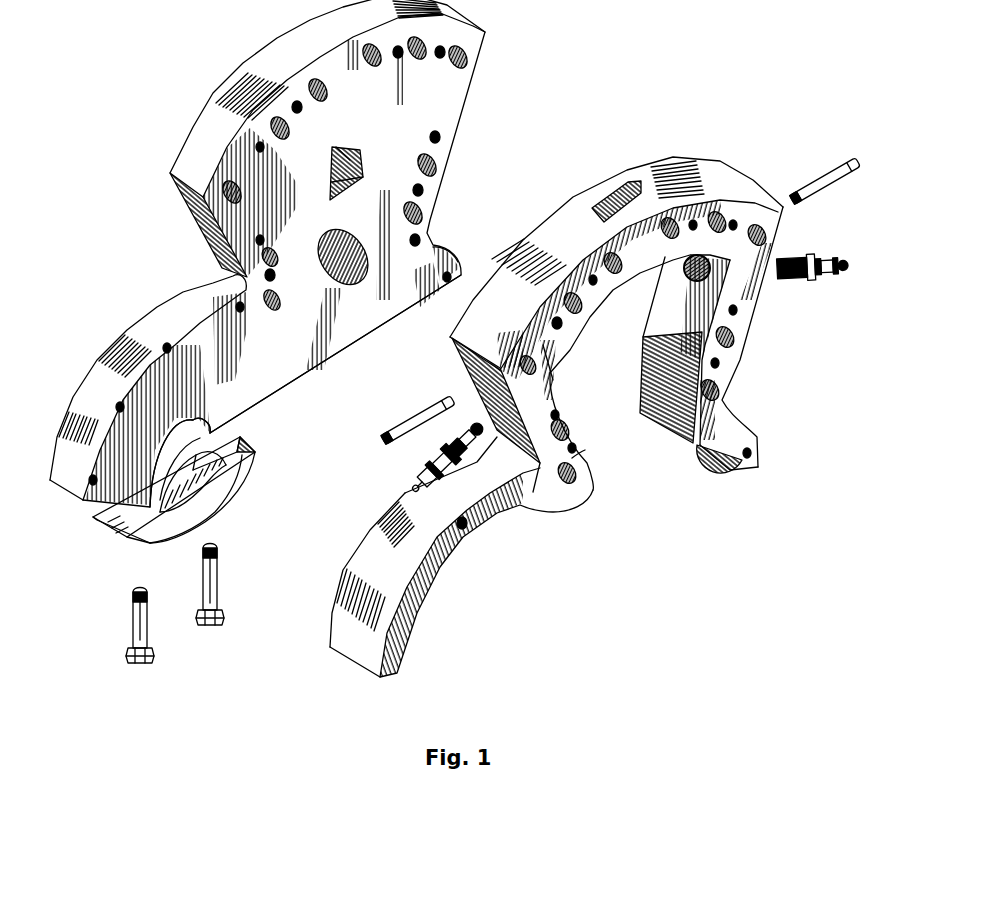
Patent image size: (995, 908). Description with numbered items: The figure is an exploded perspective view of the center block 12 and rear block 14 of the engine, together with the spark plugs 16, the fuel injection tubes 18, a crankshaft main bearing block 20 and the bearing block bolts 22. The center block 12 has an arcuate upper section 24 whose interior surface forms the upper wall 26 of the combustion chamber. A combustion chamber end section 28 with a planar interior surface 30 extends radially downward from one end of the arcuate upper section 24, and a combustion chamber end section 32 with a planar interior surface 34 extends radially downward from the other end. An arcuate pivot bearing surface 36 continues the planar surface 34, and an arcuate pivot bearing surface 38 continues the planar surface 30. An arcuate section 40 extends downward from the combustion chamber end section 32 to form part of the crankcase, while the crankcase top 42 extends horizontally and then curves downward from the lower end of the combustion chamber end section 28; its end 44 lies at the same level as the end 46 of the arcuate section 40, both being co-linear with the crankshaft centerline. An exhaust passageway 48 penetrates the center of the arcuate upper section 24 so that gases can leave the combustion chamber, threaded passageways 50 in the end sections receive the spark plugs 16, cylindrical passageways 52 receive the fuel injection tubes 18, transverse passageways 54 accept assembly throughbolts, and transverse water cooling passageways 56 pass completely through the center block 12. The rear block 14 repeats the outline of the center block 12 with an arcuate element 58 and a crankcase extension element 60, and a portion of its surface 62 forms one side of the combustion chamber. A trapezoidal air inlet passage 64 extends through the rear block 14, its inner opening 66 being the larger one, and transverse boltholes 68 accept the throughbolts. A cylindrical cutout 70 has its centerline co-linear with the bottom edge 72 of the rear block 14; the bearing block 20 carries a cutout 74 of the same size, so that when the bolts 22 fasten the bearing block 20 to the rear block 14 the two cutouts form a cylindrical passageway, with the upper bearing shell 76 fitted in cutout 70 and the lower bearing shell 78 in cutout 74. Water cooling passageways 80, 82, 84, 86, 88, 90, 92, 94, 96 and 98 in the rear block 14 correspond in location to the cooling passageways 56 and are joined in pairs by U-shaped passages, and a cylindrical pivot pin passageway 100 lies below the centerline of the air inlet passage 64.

The center block 12 is at (673, 152).
The rear block 14 is at (472, 107).
The spark plug 16 is at (424, 470).
The fuel injection tube 18 is at (402, 420).
The crankshaft main bearing block 20 is at (238, 468).
The bearing block bolt 22 is at (218, 578).
The arcuate upper section 24 is at (518, 245).
The upper wall of the combustion chamber 26 is at (603, 297).
The combustion chamber end section 28 is at (553, 380).
The planar interior surface 30 is at (573, 393).
The combustion chamber end section 32 is at (740, 320).
The planar interior surface 34 is at (652, 318).
The arcuate pivot bearing surface 36 is at (658, 422).
The arcuate pivot bearing surface 38 is at (585, 450).
The arcuate section 40 is at (752, 442).
The crankcase top 42 is at (395, 494).
The end of crankcase top 44 is at (345, 670).
The end of arcuate section 46 is at (722, 468).
The exhaust passageway 48 is at (626, 182).
The threaded passageway 50 is at (698, 278).
The cylindrical passageway 52 is at (468, 362).
The transverse passageway 54 is at (560, 328).
The transverse water cooling passageway 56 is at (610, 258).
The arcuate element 58 is at (292, 53).
The crankcase extension element 60 is at (140, 322).
The surface 62 is at (308, 226).
The air inlet passage 64 is at (368, 188).
The opening 66 is at (362, 160).
The transverse bolthole 68 is at (439, 58).
The cylindrical cutout 70 is at (190, 420).
The bottom edge 72 is at (240, 412).
The cylindrical cutout 74 is at (198, 512).
The upper bearing shell 76 is at (203, 466).
The lower bearing shell 78 is at (182, 490).
The water cooling passageway 80 is at (278, 300).
The water cooling passageway 82 is at (276, 250).
The water cooling passageway 84 is at (236, 188).
The water cooling passageway 86 is at (286, 131).
The water cooling passageway 88 is at (324, 93).
The water cooling passageway 90 is at (366, 44).
The water cooling passageway 92 is at (415, 36).
The water cooling passageway 94 is at (465, 62).
The water cooling passageway 96 is at (434, 170).
The water cooling passageway 98 is at (424, 212).
The cylindrical pivot pin passageway 100 is at (340, 280).